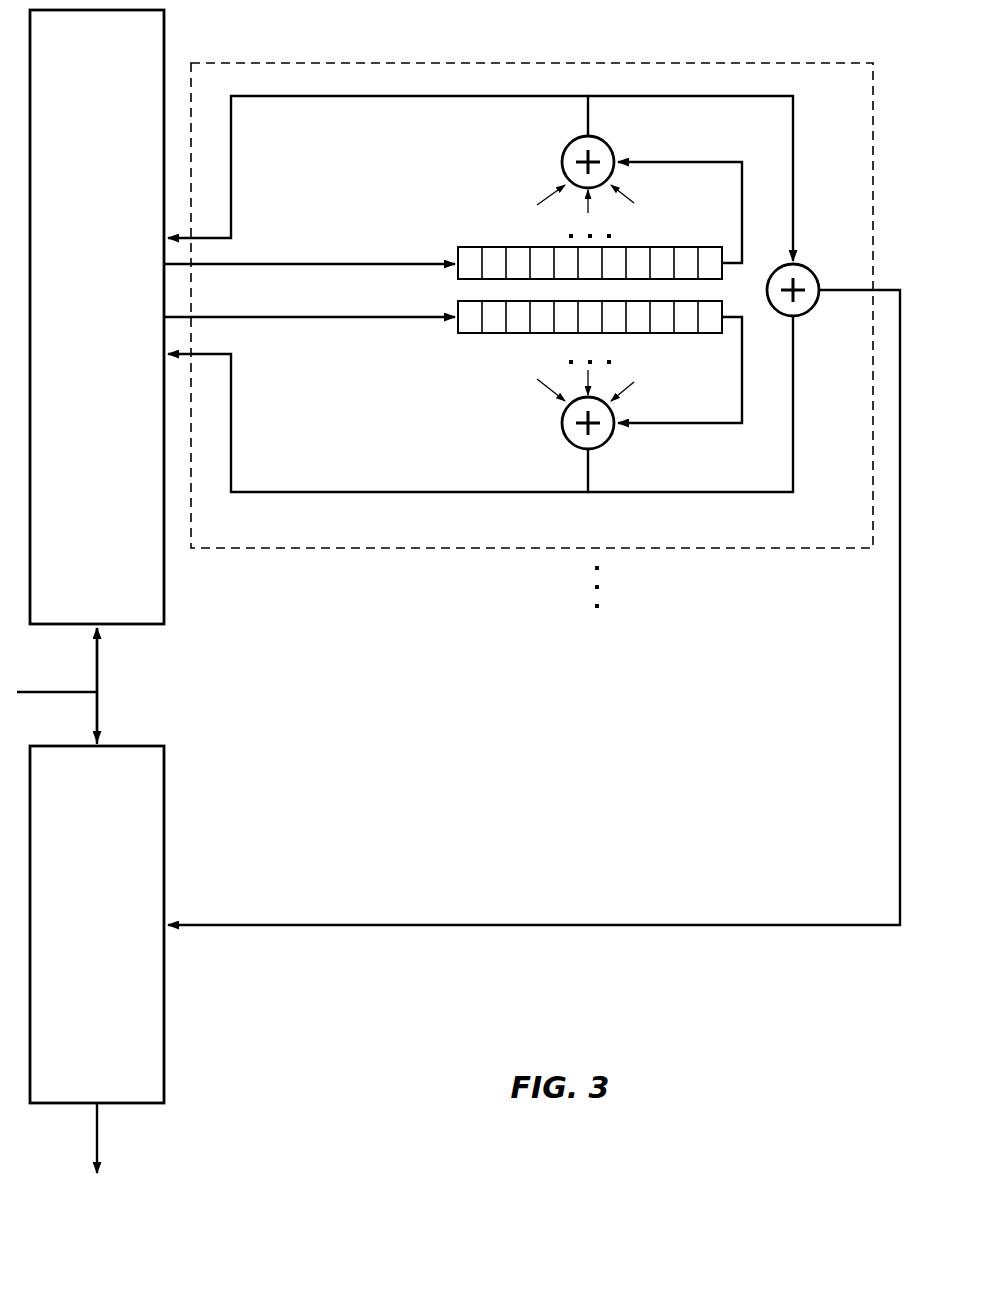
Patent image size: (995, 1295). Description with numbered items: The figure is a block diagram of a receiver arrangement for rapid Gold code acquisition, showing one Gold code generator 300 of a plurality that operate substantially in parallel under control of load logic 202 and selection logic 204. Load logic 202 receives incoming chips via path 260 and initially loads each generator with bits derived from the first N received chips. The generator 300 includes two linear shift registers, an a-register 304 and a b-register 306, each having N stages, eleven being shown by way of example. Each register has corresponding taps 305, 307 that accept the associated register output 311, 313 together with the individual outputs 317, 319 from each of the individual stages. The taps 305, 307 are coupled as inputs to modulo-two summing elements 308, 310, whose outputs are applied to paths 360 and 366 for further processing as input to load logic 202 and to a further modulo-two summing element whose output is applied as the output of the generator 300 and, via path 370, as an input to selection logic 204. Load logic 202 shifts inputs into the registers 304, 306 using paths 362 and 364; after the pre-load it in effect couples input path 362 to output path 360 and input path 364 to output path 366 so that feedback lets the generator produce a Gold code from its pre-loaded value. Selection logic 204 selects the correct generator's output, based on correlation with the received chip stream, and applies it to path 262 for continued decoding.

The load logic 202 is at (97, 317).
The selection logic 204 is at (97, 924).
The path 260 is at (124, 690).
The path 262 is at (97, 1148).
The Gold code generator 300 is at (717, 548).
The a-register 304 is at (450, 238).
The taps 305 is at (620, 217).
The b-register 306 is at (452, 367).
The taps 307 is at (620, 371).
The modulo-2 summing element 308 is at (615, 128).
The modulo-2 summing element 310 is at (621, 455).
The register output 311 is at (713, 162).
The register output 313 is at (713, 424).
The individual outputs 317 is at (549, 238).
The individual outputs 319 is at (548, 363).
The path 360 is at (242, 200).
The shift register input path 362 is at (236, 265).
The shift register input path 364 is at (403, 316).
The path 366 is at (231, 448).
The output path 370 is at (258, 925).